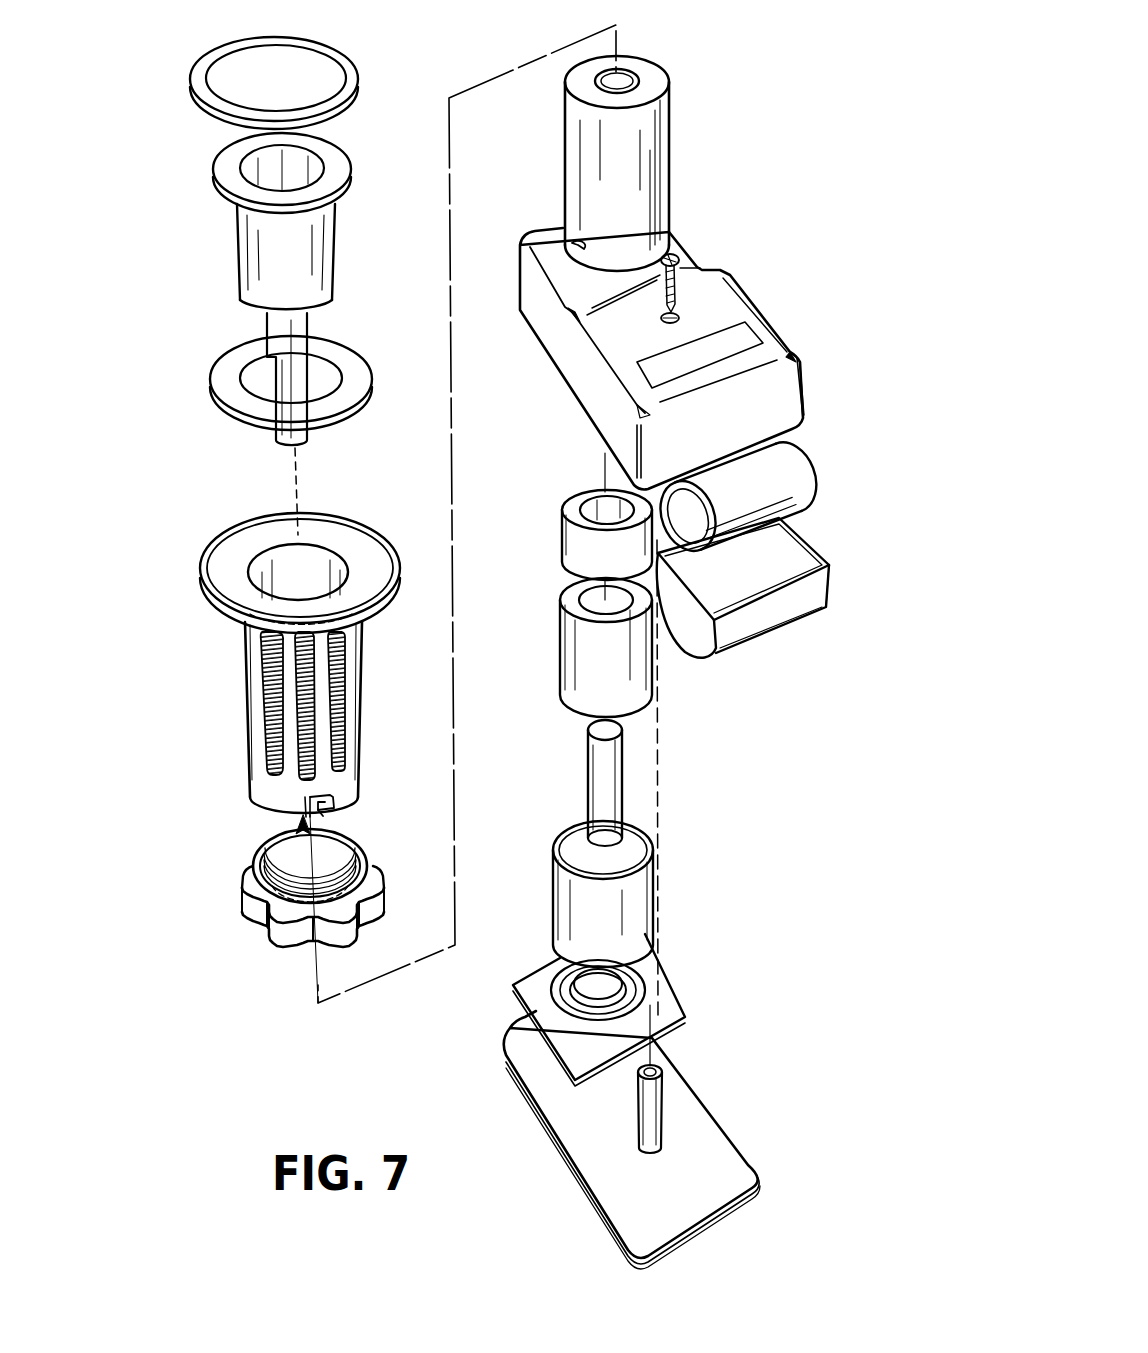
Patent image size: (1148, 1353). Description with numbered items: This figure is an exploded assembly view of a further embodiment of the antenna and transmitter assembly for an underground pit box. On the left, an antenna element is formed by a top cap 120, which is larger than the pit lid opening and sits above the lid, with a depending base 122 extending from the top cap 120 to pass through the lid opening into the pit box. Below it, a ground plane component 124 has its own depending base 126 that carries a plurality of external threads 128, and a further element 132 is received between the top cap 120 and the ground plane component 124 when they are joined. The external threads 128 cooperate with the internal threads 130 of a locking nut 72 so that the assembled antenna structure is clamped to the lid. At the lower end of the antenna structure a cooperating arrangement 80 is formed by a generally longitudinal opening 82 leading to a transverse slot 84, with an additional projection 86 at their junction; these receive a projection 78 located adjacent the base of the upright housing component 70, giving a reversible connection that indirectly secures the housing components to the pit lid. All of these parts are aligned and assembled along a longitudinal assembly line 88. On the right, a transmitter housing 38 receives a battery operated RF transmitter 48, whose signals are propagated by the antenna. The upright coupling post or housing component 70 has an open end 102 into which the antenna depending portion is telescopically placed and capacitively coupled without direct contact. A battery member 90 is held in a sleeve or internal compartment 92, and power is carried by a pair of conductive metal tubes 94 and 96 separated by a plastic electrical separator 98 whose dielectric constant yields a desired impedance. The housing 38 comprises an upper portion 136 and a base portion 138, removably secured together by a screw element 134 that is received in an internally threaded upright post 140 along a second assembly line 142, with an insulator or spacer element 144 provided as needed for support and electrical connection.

The transmitter housing 38 is at (780, 338).
The RF transmitter 48 is at (674, 1015).
The upright housing component 70 is at (668, 182).
The locking nut 72 is at (243, 870).
The projection 78 is at (580, 244).
The cooperating arrangement 80 is at (289, 800).
The longitudinal opening 82 is at (280, 848).
The transverse slot 84 is at (330, 800).
The additional projection 86 is at (323, 810).
The longitudinal assembly line 88 is at (607, 453).
The battery member 90 is at (800, 472).
The sleeve or internal compartment 92 is at (808, 600).
The metal tube 94 is at (557, 846).
The metal tube 96 is at (587, 737).
The electrical separator 98 is at (565, 600).
The open end 102 is at (630, 73).
The top cap 120 is at (307, 92).
The depending base 122 is at (213, 292).
The ground plane component 124 is at (248, 503).
The depending base 126 is at (208, 676).
The external threads 128 is at (360, 688).
The internal threads 130 is at (363, 840).
The further element 132 is at (335, 405).
The screw element 134 is at (678, 260).
The upper portion 136 is at (800, 410).
The base portion 138 is at (680, 1210).
The upright post 140 is at (662, 1098).
The assembly line 142 is at (660, 752).
The spacer element 144 is at (565, 512).